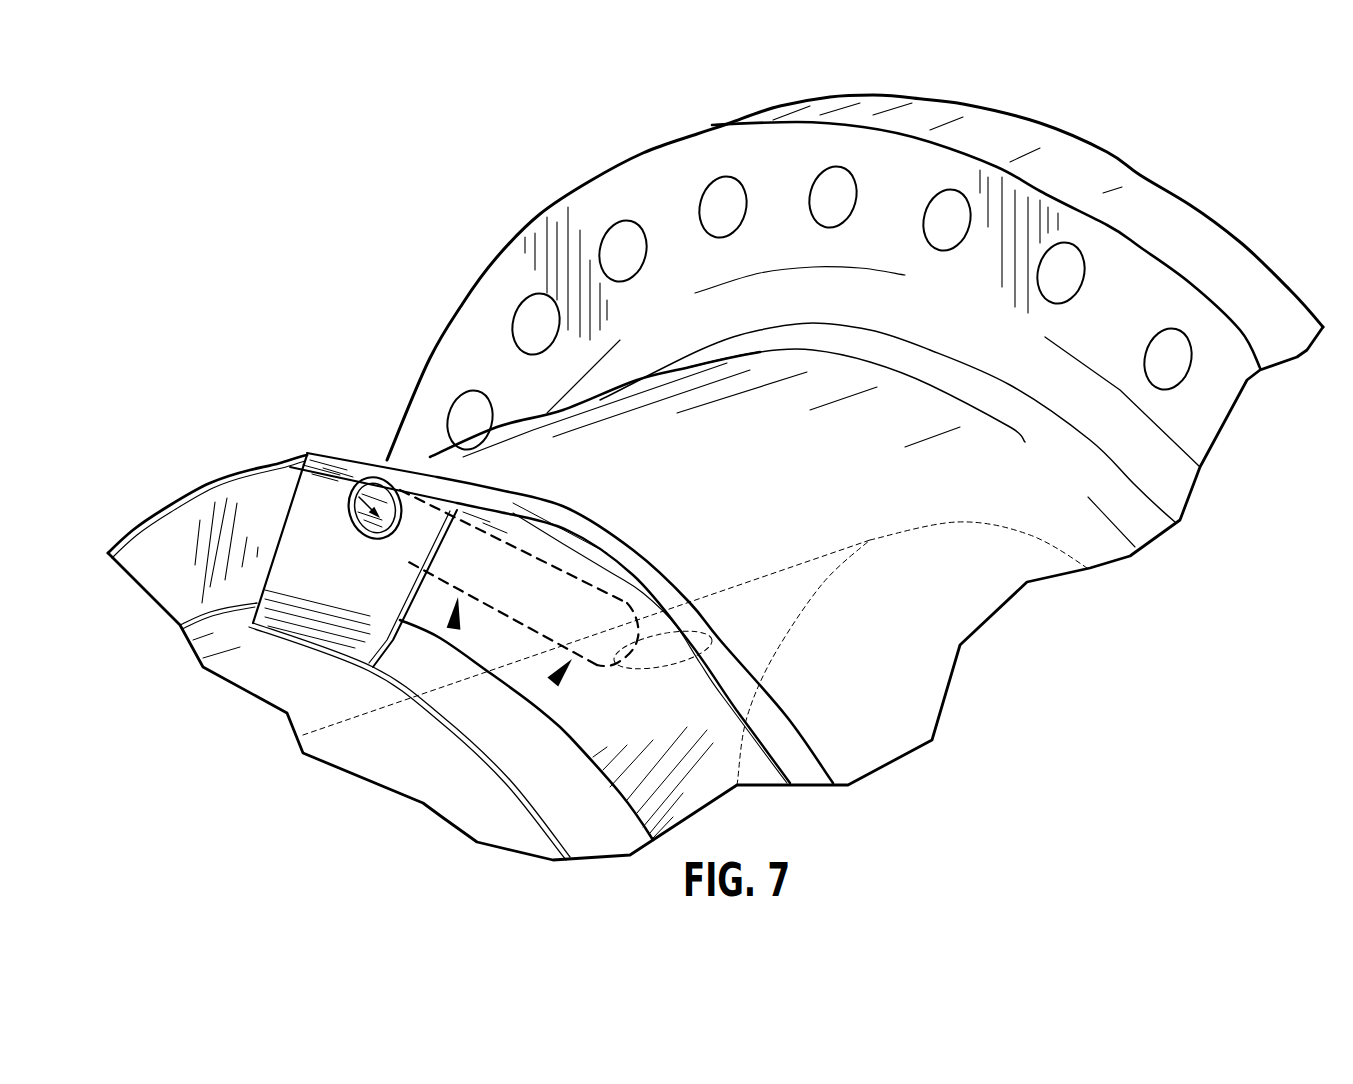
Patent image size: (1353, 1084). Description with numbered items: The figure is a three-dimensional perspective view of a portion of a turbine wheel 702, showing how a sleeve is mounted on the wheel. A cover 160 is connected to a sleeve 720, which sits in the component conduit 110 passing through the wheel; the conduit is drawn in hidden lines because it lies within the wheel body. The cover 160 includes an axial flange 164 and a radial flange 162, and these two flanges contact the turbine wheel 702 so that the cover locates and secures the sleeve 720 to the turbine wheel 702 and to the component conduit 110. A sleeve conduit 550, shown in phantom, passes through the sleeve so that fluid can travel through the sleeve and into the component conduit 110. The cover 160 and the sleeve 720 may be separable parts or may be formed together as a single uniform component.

The turbine wheel 702 is at (160, 398).
The cover 160 is at (367, 462).
The axial flange 164 is at (432, 488).
The sleeve conduit 550 is at (337, 587).
The radial flange 162 is at (333, 580).
The sleeve 720 is at (403, 490).
The component conduit 110 is at (572, 660).